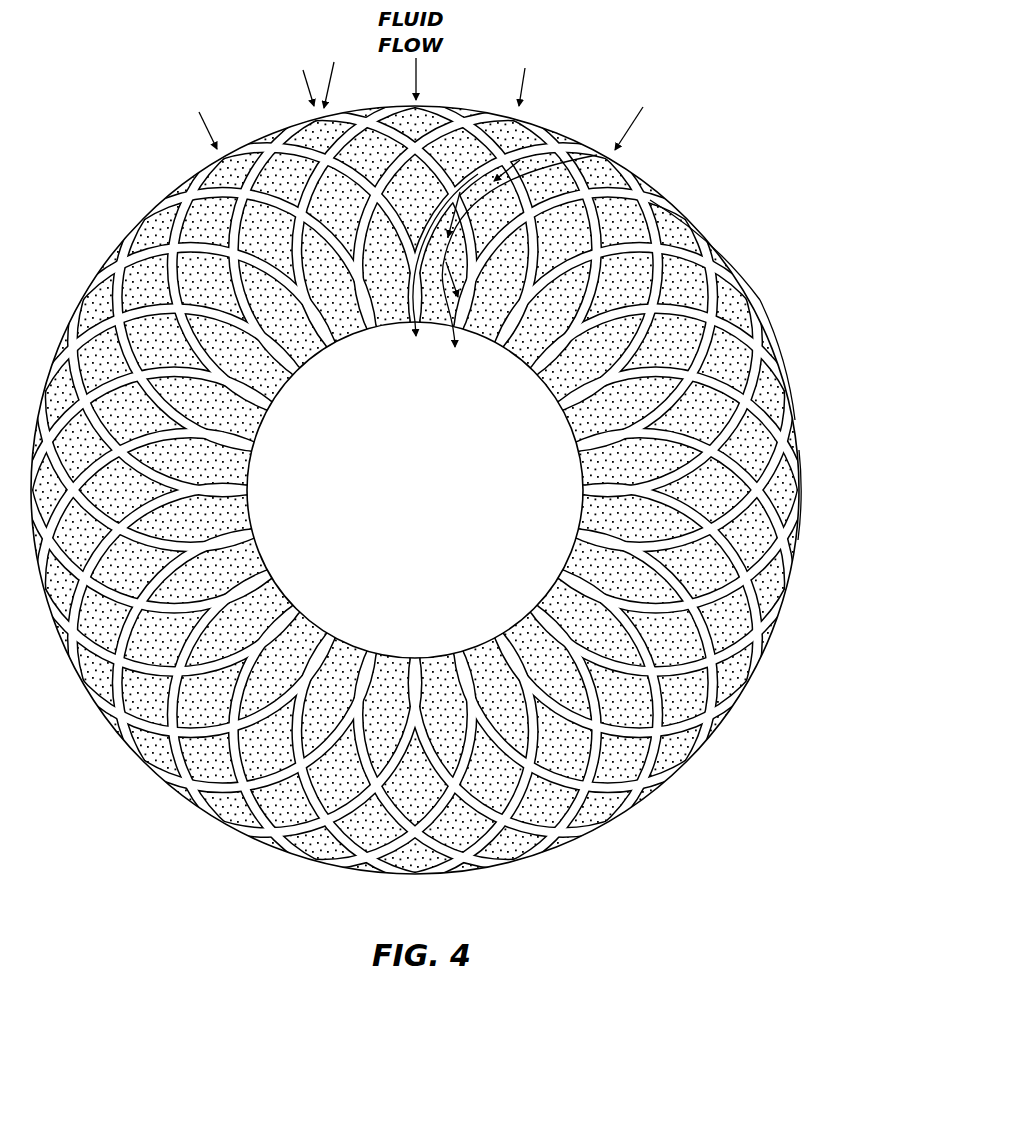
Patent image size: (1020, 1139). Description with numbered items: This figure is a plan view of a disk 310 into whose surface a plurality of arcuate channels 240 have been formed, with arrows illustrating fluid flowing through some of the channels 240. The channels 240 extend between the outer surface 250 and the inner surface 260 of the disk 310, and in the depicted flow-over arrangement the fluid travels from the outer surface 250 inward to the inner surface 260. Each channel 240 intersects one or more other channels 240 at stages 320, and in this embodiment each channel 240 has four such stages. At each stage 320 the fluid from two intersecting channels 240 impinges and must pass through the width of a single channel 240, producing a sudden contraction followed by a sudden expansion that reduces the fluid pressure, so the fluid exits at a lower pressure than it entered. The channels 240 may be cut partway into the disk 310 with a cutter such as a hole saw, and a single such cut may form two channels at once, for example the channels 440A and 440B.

The disk 310 is at (104, 250).
The arcuate channels 240 is at (672, 133).
The stages 320 is at (478, 217).
The outer surface 250 is at (738, 258).
The channel 440A is at (785, 372).
The channel 440B is at (802, 498).
The inner surface 260 is at (578, 482).